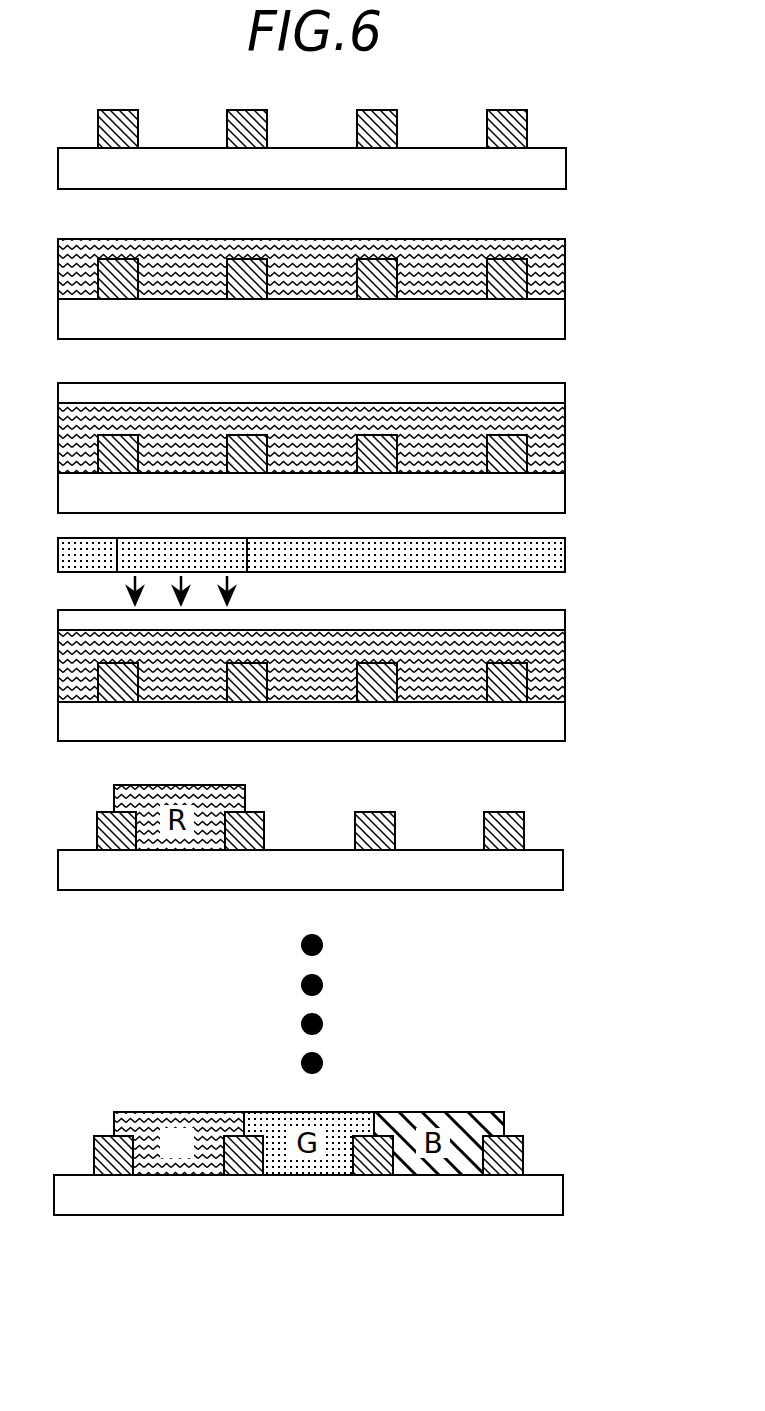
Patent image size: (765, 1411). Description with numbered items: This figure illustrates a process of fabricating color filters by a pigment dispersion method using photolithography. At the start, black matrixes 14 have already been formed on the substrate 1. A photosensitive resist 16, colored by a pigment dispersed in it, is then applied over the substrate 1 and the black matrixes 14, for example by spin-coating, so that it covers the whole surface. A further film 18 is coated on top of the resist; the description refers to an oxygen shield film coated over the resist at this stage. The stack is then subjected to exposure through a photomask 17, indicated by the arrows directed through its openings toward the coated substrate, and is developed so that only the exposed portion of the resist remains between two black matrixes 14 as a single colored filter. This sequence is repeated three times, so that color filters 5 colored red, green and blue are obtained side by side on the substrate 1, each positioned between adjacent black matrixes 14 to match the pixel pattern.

The substrate 1 is at (545, 172).
The black matrixes 14 is at (527, 128).
The photosensitive resist 16 is at (540, 281).
The protective layer 18 is at (550, 394).
The photomask 17 is at (556, 556).
The color filters 5 is at (113, 1111).